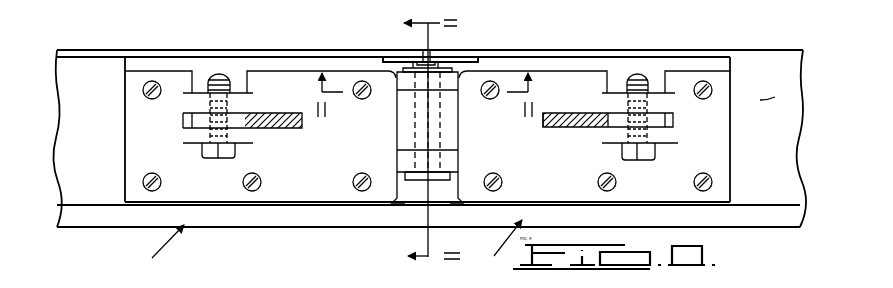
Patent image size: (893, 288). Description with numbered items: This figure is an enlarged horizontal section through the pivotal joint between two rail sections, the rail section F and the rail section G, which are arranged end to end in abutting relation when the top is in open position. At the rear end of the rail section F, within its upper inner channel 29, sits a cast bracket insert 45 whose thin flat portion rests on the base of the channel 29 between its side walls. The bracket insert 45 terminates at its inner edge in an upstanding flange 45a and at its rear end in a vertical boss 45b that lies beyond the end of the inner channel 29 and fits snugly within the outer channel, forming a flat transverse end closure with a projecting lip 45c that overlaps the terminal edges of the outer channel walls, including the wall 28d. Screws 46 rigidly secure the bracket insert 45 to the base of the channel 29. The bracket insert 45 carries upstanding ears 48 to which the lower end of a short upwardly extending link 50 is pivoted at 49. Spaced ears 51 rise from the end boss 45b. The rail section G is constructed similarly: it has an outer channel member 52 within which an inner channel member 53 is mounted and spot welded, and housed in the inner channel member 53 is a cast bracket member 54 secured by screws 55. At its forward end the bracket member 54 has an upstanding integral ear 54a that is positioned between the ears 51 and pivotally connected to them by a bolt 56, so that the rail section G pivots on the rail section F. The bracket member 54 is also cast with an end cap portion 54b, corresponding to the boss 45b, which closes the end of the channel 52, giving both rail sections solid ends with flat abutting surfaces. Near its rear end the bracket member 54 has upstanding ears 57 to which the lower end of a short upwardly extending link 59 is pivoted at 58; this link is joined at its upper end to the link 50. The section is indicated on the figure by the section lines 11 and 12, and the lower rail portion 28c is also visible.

The section line 11- 11 is at (407, 139).
The section line 12- 12 is at (416, 95).
The lower rail 28c is at (78, 220).
The wall of the outer channel 28d is at (192, 50).
The upper inner channel 29 is at (88, 68).
The bracket insert 45 is at (307, 188).
The upstanding flange 45a is at (278, 62).
The vertical boss 45b is at (400, 188).
The projecting lip 45c is at (425, 50).
The screws 46 is at (250, 191).
The upstanding ears 48 is at (192, 128).
The pivot 49 is at (218, 158).
The link 50 is at (285, 128).
The spaced ears 51 is at (452, 82).
The outer channel member 52 is at (747, 53).
The inner channel member 53 is at (763, 91).
The bracket member 54 is at (712, 142).
The upstanding integral ear 54a is at (543, 57).
The end cap portion 54b is at (453, 183).
The screws 55 is at (712, 180).
The bolt 56 is at (440, 180).
The upstanding ears 57 is at (676, 128).
The pivot 58 is at (650, 160).
The link 59 is at (555, 128).
The rail section F is at (157, 252).
The rail section G is at (497, 249).